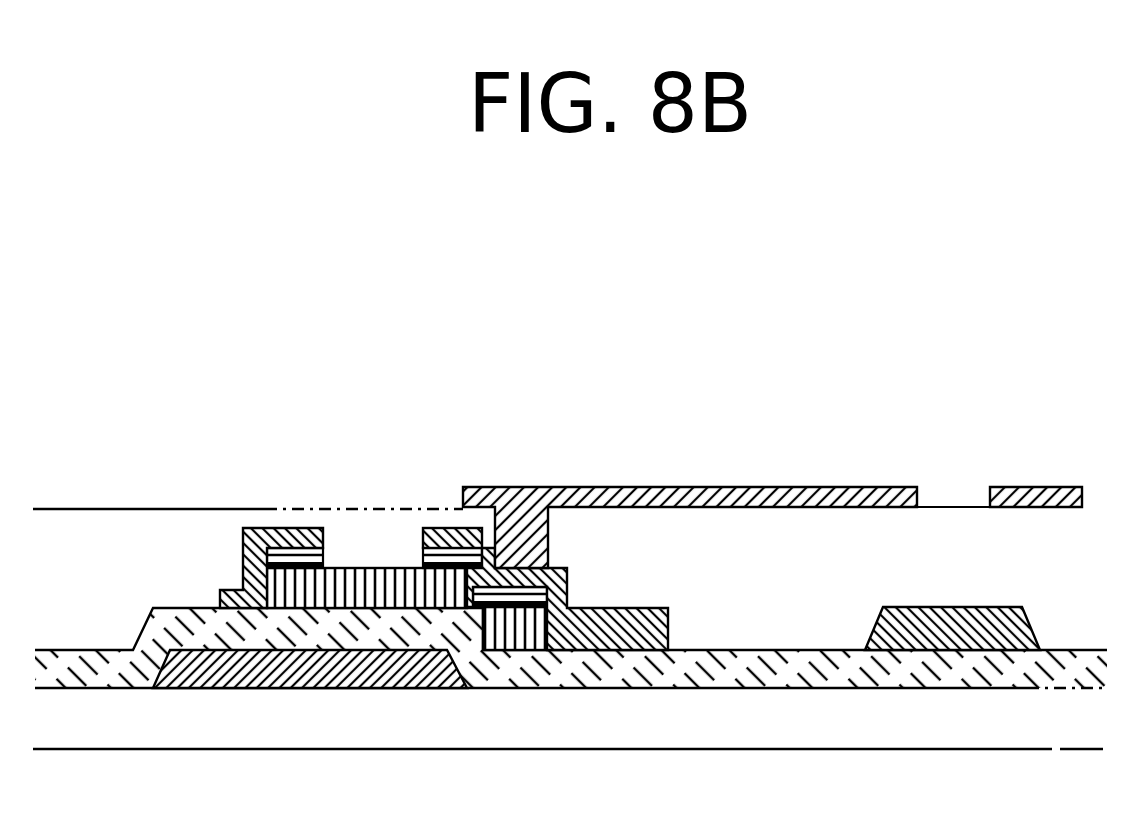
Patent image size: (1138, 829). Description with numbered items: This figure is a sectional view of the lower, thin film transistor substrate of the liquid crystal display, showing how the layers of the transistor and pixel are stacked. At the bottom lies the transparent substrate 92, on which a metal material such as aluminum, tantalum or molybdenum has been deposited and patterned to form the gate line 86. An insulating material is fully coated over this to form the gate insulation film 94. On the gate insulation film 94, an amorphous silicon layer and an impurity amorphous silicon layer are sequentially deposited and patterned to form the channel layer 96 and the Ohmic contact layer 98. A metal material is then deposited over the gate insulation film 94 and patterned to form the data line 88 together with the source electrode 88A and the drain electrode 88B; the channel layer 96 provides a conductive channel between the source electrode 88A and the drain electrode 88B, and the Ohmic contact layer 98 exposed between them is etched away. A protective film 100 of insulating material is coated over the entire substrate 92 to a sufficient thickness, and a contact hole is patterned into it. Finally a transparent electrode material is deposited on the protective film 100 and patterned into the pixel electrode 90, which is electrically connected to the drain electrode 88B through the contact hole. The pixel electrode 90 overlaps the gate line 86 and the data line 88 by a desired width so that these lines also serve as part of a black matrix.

The gate line 86 is at (372, 688).
The data line 88 is at (972, 607).
The source electrode 88A is at (302, 528).
The drain electrode 88B is at (435, 528).
The pixel electrode 90 is at (762, 488).
The substrate 92 is at (563, 728).
The gate insulation film 94 is at (683, 688).
The channel layer 96 is at (367, 568).
The Ohmic contact layer 98 is at (267, 528).
The protective film 100 is at (657, 522).